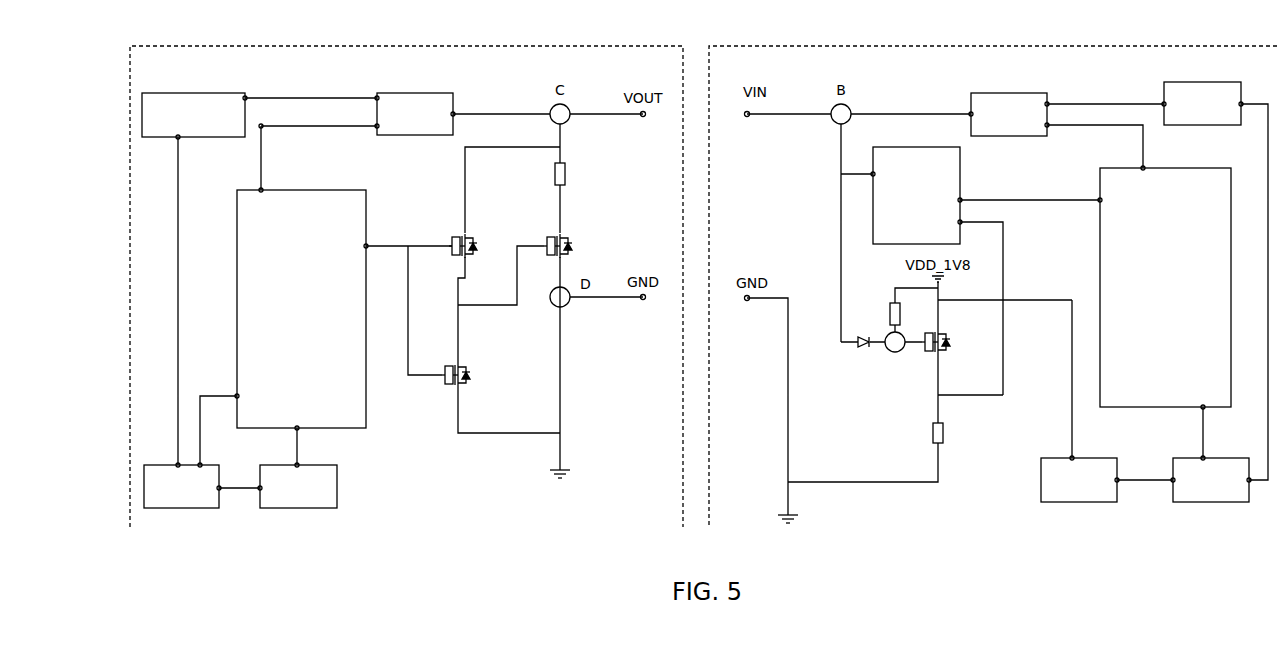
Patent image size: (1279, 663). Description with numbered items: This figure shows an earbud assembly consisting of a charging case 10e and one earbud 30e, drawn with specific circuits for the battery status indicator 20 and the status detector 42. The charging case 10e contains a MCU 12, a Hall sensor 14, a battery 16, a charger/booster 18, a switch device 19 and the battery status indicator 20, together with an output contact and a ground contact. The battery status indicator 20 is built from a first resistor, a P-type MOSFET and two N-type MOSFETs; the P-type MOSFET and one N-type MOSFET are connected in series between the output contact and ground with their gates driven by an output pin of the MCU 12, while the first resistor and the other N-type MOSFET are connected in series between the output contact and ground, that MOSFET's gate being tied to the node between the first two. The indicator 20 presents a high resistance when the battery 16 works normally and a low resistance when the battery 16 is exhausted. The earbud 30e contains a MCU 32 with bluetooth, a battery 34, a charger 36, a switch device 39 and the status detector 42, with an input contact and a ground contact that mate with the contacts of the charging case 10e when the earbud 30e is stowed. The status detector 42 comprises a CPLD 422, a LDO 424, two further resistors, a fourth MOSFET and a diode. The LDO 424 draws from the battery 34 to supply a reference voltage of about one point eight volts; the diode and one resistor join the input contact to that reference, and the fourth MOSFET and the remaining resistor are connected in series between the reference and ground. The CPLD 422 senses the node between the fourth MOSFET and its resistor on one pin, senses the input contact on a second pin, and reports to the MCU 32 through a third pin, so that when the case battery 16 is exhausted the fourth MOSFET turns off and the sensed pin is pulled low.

The charging case 10e is at (406, 286).
The MCU 12 is at (301, 309).
The Hall sensor 14 is at (298, 486).
The battery 16 is at (181, 486).
The charger/booster 18 is at (193, 115).
The switch device 19 is at (415, 114).
The battery status indicator 20 is at (593, 406).
The earbud 30e is at (994, 285).
The MCU with bluetooth 32 is at (1165, 287).
The battery 34 is at (1211, 480).
The charger 36 is at (1202, 103).
The switch device 39 is at (1009, 114).
The status detector 42 is at (882, 518).
The CPLD 422 is at (936, 195).
The LDO 424 is at (1079, 480).